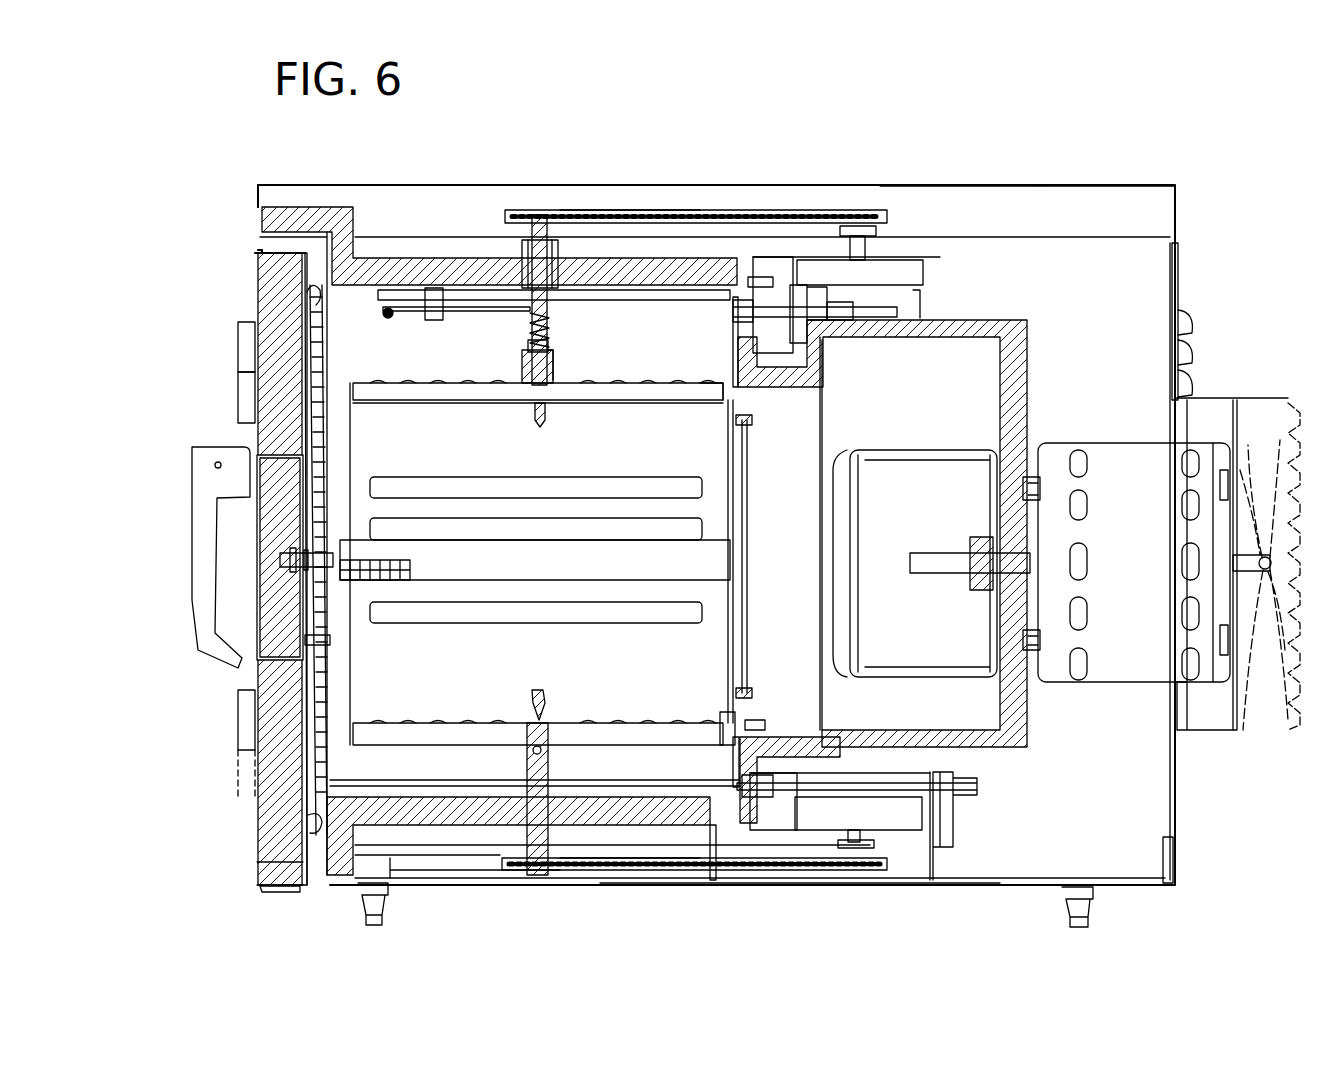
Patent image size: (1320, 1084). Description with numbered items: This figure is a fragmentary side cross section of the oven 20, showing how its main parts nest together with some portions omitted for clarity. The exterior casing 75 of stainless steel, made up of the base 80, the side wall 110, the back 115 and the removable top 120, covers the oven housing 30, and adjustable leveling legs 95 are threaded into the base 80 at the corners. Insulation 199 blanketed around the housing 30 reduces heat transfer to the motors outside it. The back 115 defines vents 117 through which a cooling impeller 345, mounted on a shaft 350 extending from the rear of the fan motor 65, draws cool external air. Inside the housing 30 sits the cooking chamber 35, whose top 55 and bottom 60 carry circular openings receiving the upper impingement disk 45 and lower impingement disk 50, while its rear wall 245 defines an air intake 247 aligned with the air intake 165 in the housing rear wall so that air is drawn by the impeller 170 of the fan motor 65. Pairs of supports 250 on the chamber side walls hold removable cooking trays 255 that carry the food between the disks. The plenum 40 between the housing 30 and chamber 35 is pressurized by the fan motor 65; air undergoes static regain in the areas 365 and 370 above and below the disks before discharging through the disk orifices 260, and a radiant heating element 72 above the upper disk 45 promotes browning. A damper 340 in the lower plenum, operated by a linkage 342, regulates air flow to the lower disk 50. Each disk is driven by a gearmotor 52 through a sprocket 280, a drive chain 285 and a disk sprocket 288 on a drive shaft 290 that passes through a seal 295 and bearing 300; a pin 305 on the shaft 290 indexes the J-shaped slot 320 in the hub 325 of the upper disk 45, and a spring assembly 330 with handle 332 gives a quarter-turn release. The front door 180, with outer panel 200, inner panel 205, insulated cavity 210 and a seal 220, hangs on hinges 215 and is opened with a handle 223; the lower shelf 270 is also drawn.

The oven 20 is at (1222, 212).
The oven housing 30 is at (718, 802).
The cooking chamber 35 is at (770, 721).
The plenum 40 is at (279, 569).
The upper impingement disk 45 is at (705, 380).
The lower impingement disk 50 is at (690, 712).
The gearmotor 52 is at (882, 268).
The top of the cooking chamber 55 is at (742, 414).
The bottom of the cooking chamber 60 is at (758, 740).
The fan motor 65 is at (1147, 692).
The radiant heating element 72 is at (636, 320).
The exterior casing 75 is at (958, 183).
The base 80 is at (752, 885).
The leveling legs 95 is at (392, 920).
The side wall 110 is at (1100, 823).
The back 115 is at (1180, 282).
The vents 117 is at (1182, 315).
The top of the casing 120 is at (1072, 180).
The air intake 165 is at (818, 597).
The impeller 170 is at (1010, 472).
The door 180 is at (256, 252).
The insulation 199 is at (1015, 722).
The outer panel 200 is at (242, 590).
The inner panel 205 is at (296, 746).
The insulated cavity 210 is at (282, 604).
The hinges 215 is at (236, 382).
The seal 220 is at (365, 235).
The handle 223 is at (205, 443).
The rear wall of the cooking chamber 245 is at (745, 400).
The air intake 247 is at (748, 495).
The supports 250 is at (478, 478).
The cooking trays 255 is at (592, 538).
The impingement disk orifices 260 is at (415, 385).
The lower shelf 270 is at (387, 741).
The sprocket 280 is at (860, 207).
The drive chain 285 is at (703, 218).
The disk sprocket 288 is at (548, 207).
The disk drive shaft 290 is at (540, 498).
The seal 295 is at (598, 864).
The bearing 300 is at (520, 250).
The pin 305 is at (520, 366).
The J-shaped slot 320 is at (520, 368).
The hub 325 is at (560, 375).
The spring assembly 330 is at (523, 333).
The handle 332 is at (548, 418).
The damper 340 is at (387, 745).
The linkage 342 is at (970, 797).
The cooling impeller 345 is at (1262, 455).
The shaft 350 is at (1255, 650).
The static regain area 365 is at (374, 338).
The static regain area 370 is at (422, 785).